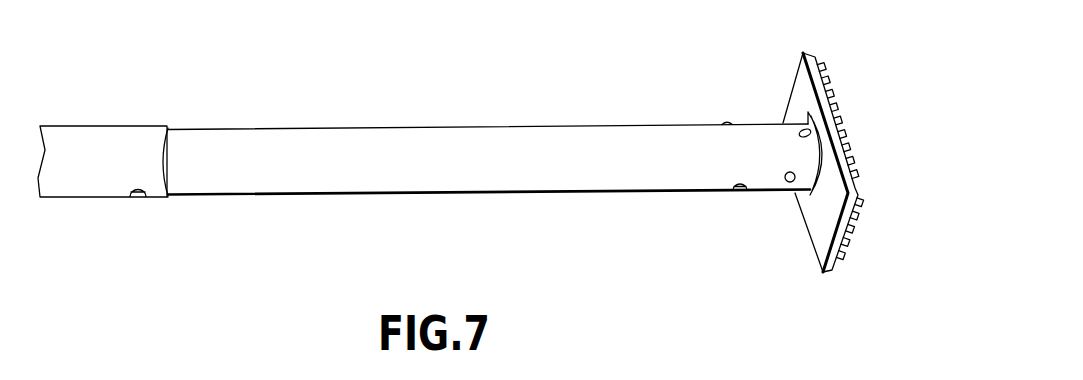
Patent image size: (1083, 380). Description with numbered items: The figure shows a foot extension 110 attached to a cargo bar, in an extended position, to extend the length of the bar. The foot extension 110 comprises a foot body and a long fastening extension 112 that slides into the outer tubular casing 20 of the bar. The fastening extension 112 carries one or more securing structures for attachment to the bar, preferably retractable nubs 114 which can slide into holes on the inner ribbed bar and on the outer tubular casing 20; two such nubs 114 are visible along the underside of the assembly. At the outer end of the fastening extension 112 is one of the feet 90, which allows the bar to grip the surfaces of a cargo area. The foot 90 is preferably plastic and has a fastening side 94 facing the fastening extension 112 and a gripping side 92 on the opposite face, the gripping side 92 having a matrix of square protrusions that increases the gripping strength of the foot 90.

The outer tubular casing 20 is at (83, 140).
The long fastening extension 112 is at (402, 137).
The foot extension 110 is at (569, 177).
The retractable nubs 114 is at (137, 199).
The feet 90 is at (820, 73).
The gripping side 92 is at (853, 150).
The fastening side 94 is at (817, 222).